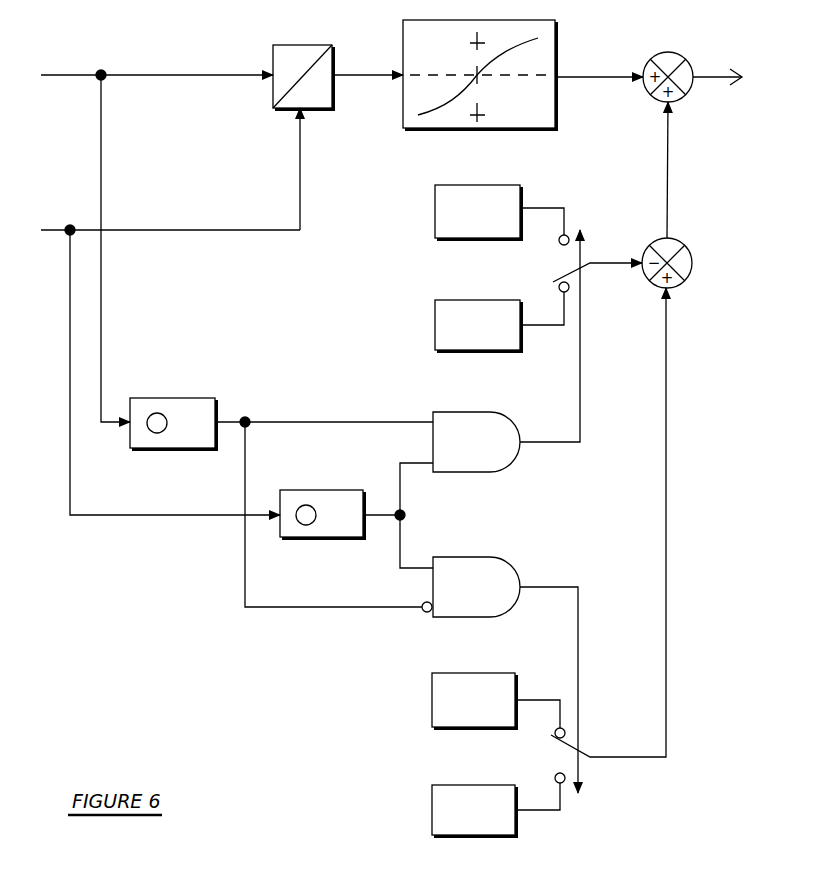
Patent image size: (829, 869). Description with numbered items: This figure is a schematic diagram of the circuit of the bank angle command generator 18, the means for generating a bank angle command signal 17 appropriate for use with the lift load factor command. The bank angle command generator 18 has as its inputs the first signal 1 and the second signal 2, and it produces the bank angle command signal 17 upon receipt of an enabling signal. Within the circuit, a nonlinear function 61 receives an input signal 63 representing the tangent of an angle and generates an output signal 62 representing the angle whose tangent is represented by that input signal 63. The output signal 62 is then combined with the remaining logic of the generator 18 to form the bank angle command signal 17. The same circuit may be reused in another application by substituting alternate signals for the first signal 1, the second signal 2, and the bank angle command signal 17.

The first signal 1 is at (148, 224).
The second signal 2 is at (162, 311).
The bank angle command signal 17 is at (729, 57).
The bank angle command generator 18 is at (398, 511).
The nonlinear function 61 is at (442, 133).
The output signal 62 is at (599, 56).
The input signal 63 is at (338, 72).